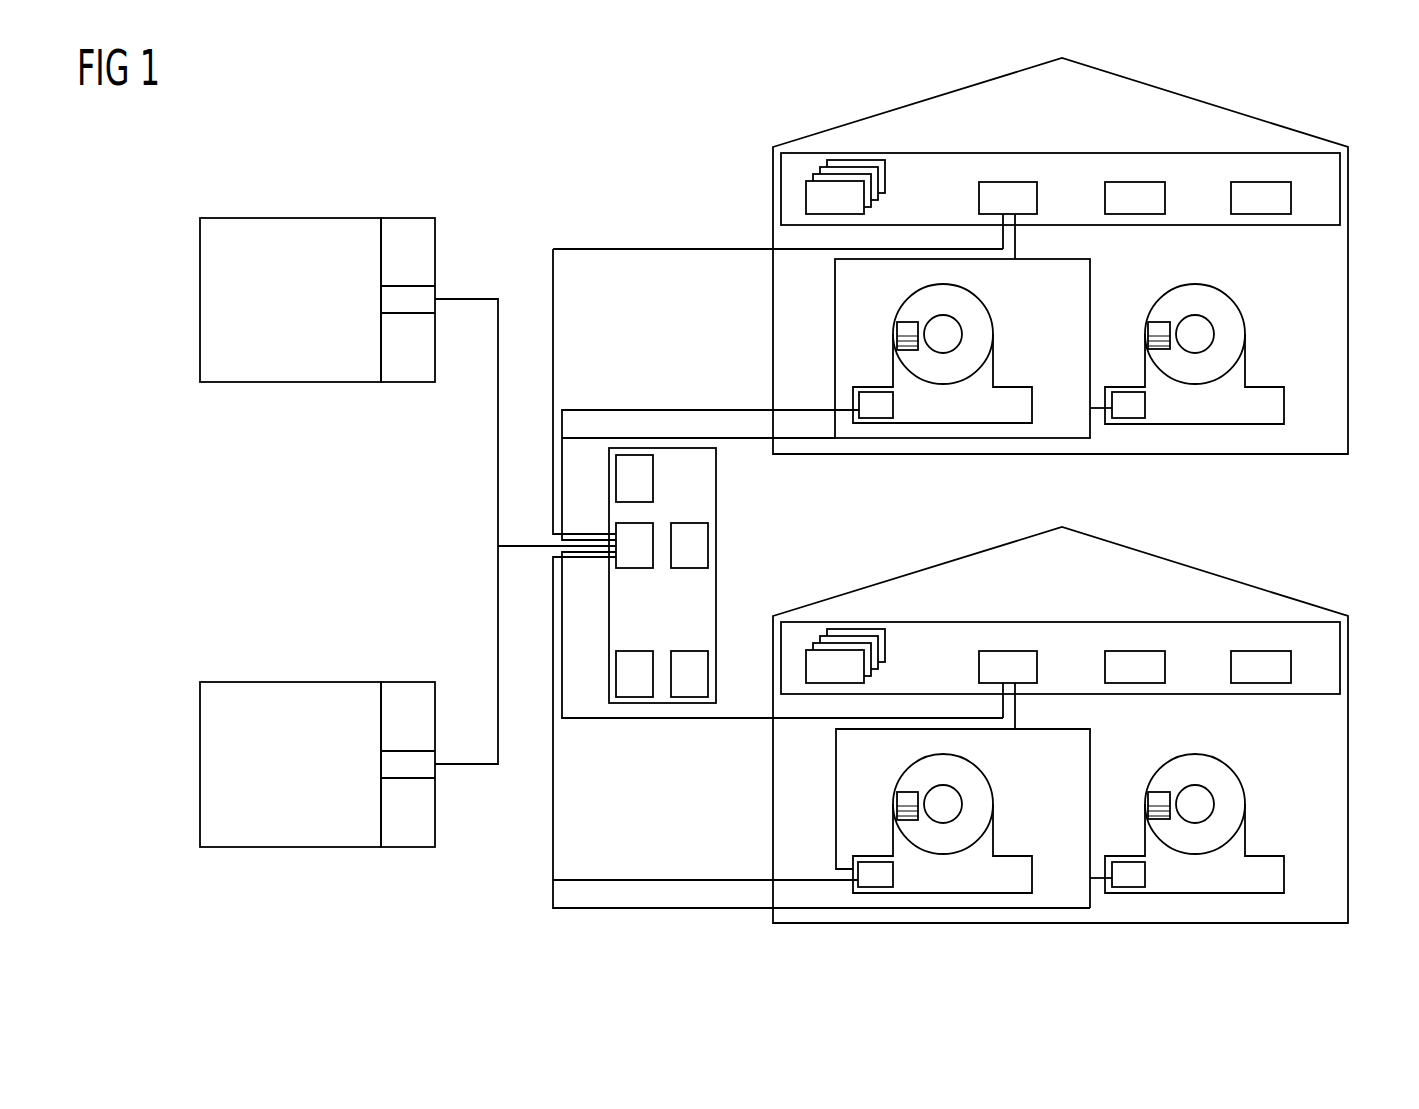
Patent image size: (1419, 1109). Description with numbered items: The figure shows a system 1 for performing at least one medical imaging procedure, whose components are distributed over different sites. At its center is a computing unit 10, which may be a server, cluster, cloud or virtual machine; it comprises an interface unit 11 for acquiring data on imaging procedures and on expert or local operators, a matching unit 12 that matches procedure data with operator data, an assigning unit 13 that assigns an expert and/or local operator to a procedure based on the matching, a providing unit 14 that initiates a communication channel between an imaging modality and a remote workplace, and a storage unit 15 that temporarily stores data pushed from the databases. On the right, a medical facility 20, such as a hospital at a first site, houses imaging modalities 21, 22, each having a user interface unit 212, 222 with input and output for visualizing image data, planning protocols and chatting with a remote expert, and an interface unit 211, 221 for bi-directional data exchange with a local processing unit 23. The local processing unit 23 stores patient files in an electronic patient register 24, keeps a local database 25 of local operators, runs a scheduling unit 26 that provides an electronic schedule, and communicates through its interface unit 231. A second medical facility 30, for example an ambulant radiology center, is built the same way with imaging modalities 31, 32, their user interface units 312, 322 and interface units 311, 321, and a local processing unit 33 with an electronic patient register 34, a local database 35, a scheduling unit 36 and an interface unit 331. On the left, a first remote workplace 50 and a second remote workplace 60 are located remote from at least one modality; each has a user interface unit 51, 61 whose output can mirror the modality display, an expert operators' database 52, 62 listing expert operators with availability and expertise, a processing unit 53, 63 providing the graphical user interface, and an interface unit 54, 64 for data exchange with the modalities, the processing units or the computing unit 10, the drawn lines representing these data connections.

The system 1 is at (592, 134).
The computing unit 10 is at (717, 510).
The interface unit 11 is at (640, 569).
The matching unit 12 is at (654, 476).
The assigning unit 13 is at (709, 545).
The providing unit 14 is at (625, 650).
The storage unit 15 is at (685, 650).
The medical facility 20 is at (1349, 255).
The imaging modality 21 is at (994, 362).
The interface unit 211 is at (895, 405).
The user interface unit 212 is at (905, 322).
The imaging modality 22 is at (1246, 362).
The interface unit 221 is at (1147, 405).
The user interface unit 222 is at (1155, 322).
The local processing unit 23 is at (1342, 188).
The interface unit 231 is at (978, 200).
The electronic patient register 24 is at (898, 158).
The local database 25 is at (1230, 200).
The scheduling unit 26 is at (1104, 200).
The medical facility 30 is at (1091, 725).
The imaging modality 31 is at (951, 814).
The interface unit 311 is at (910, 876).
The user interface unit 312 is at (893, 777).
The imaging modality 32 is at (1196, 814).
The interface unit 321 is at (1152, 876).
The user interface unit 322 is at (1143, 777).
The local processing unit 33 is at (1095, 636).
The interface unit 331 is at (972, 690).
The electronic patient register 34 is at (852, 613).
The local database 35 is at (1232, 668).
The scheduling unit 36 is at (1106, 668).
The first remote workplace 50 is at (435, 212).
The user interface unit 51 is at (288, 383).
The expert operators' database 52 is at (407, 383).
The processing unit 53 is at (436, 250).
The interface unit 54 is at (436, 293).
The second remote workplace 60 is at (435, 675).
The user interface unit 61 is at (288, 848).
The expert operators' database 62 is at (407, 848).
The processing unit 63 is at (436, 713).
The interface unit 64 is at (436, 772).